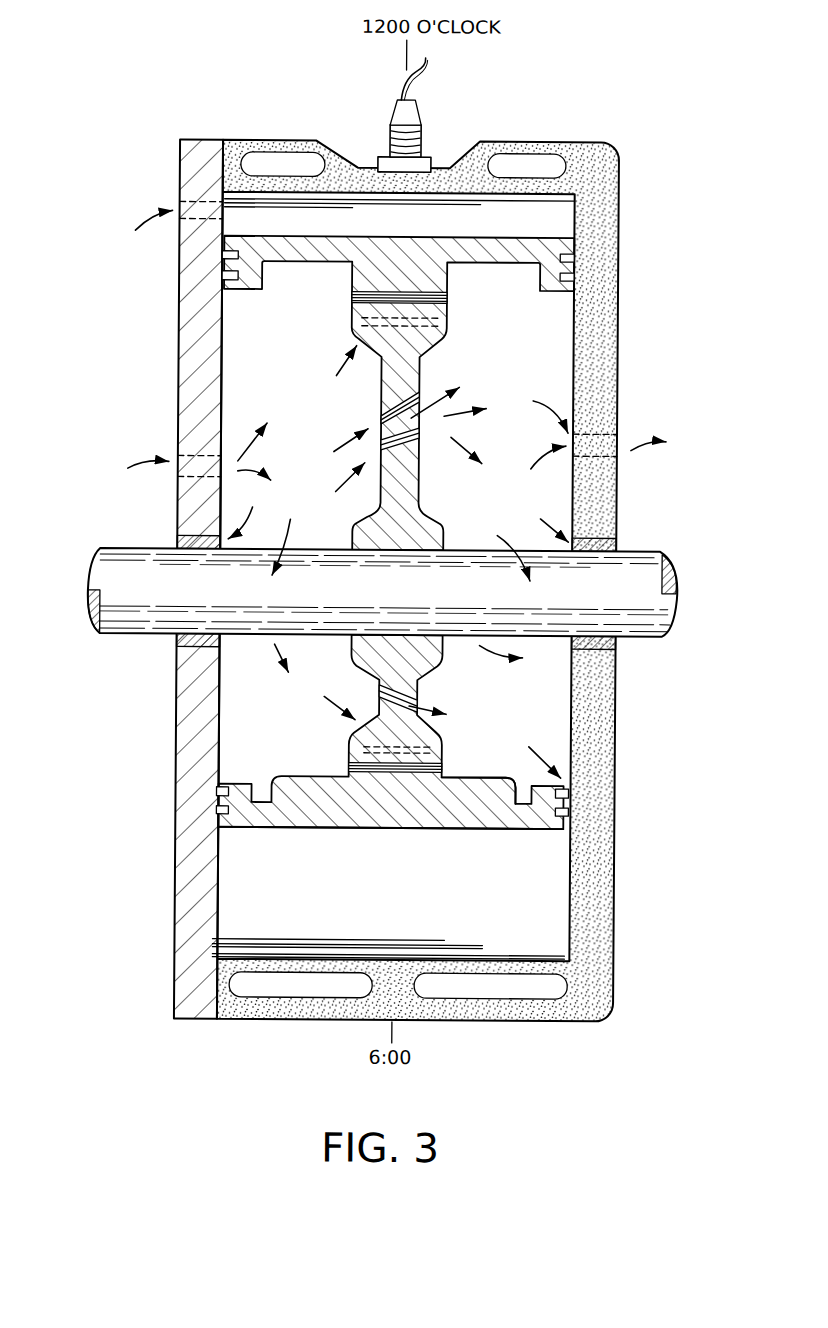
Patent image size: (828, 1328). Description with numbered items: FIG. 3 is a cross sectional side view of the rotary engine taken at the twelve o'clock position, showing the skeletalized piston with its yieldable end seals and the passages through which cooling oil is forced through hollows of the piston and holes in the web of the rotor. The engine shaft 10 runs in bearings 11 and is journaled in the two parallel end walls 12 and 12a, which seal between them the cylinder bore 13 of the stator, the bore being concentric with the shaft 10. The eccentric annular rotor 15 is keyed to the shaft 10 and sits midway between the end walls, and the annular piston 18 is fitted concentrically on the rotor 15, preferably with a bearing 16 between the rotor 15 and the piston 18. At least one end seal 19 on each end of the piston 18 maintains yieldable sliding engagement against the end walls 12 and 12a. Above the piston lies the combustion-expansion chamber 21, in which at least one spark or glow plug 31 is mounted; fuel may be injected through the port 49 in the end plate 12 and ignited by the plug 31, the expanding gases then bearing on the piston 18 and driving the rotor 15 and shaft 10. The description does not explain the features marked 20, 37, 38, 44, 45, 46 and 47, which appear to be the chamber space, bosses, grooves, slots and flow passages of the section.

The engine shaft 10 is at (383, 592).
The bearings 11 is at (618, 545).
The end wall 12 is at (182, 344).
The end wall 12a is at (607, 338).
The cylinder bore 13 is at (485, 960).
The eccentric annular rotor 15 is at (423, 486).
The bearing 16 is at (352, 297).
The annular piston 18 is at (388, 830).
The end seal 19 is at (232, 288).
The lower chamber 20 is at (394, 903).
The combustion-expansion chamber 21 is at (399, 215).
The spark plug 31 is at (385, 132).
The boss 37 is at (458, 774).
The grooves 38 is at (380, 406).
The slots 44 is at (525, 165).
The inlet passage 45 is at (190, 472).
The outlet passage 46 is at (610, 450).
The hub passage 47 is at (353, 331).
The port 49 is at (184, 203).